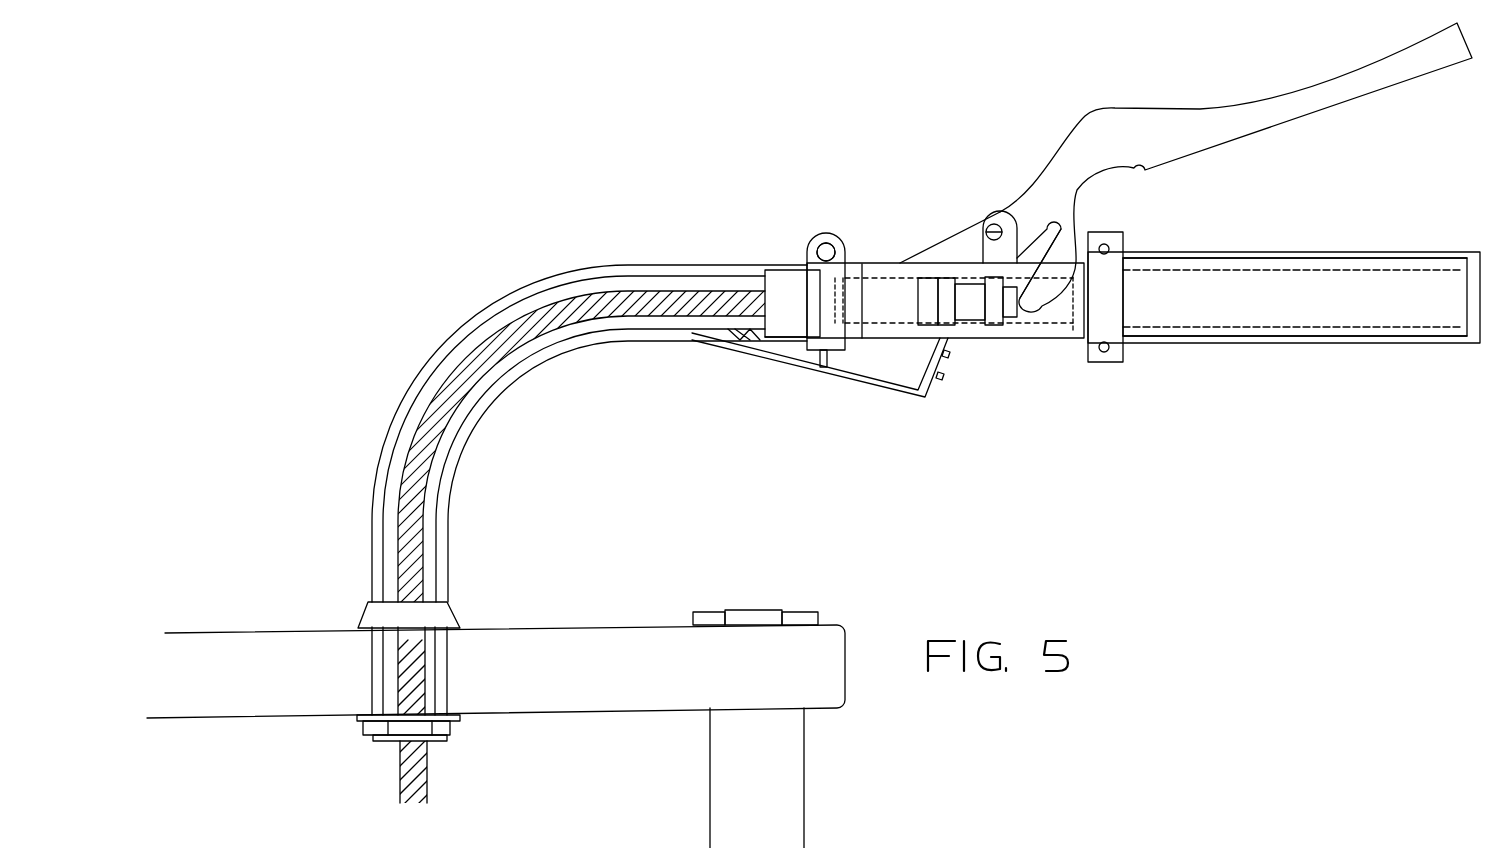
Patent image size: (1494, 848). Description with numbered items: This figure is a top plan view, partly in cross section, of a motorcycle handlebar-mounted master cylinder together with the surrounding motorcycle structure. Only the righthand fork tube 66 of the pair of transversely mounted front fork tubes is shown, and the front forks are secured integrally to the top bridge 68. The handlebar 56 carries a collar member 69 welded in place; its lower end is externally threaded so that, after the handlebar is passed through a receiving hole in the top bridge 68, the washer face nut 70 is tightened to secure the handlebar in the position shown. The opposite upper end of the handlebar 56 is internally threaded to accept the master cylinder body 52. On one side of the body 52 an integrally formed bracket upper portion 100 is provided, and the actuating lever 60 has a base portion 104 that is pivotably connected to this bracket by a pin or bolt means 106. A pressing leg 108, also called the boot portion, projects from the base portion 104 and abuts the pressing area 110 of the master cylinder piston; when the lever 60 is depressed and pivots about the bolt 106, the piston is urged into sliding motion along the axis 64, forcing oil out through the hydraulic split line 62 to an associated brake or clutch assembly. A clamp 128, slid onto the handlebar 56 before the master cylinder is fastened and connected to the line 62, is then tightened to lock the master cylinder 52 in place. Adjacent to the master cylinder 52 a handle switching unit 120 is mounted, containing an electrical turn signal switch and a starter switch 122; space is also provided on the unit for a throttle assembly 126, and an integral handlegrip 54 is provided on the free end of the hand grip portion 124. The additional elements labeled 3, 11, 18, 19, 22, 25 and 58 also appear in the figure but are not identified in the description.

The mounting block 3 is at (762, 608).
The seal 11 is at (765, 297).
The clamp pin 18 is at (823, 233).
The coupling block 19 is at (823, 302).
The lock pin 22 is at (822, 368).
The hydraulic line 25 is at (735, 333).
The master cylinder body 52 is at (937, 263).
The integral handlegrip 54 is at (1368, 345).
The handlebar 56 is at (490, 305).
The fitting 58 is at (780, 337).
The actuating lever 60 is at (1198, 158).
The hydraulic split line 62 is at (512, 350).
The axis 64 is at (1390, 293).
The righthand fork tube 66 is at (710, 770).
The top bridge 68 is at (510, 628).
The collar member 69 is at (455, 601).
The washer face nut 70 is at (462, 727).
The bracket upper portion 100 is at (963, 248).
The base portion 104 is at (1040, 193).
The pin or bolt means 106 is at (990, 224).
The pressing leg 108 is at (1050, 303).
The pressing area 110 is at (1018, 318).
The handle switching unit 120 is at (852, 383).
The starter switch 122 is at (957, 362).
The hand grip portion 124 is at (1253, 282).
The throttle assembly 126 is at (1125, 362).
The clamp 128 is at (807, 247).